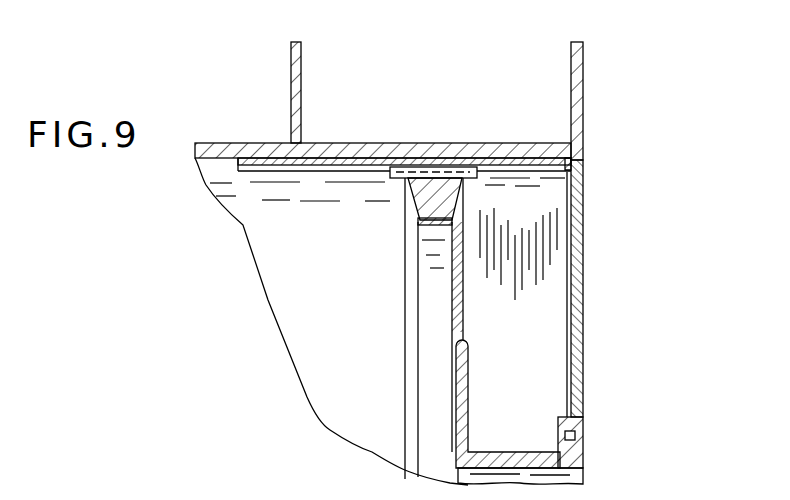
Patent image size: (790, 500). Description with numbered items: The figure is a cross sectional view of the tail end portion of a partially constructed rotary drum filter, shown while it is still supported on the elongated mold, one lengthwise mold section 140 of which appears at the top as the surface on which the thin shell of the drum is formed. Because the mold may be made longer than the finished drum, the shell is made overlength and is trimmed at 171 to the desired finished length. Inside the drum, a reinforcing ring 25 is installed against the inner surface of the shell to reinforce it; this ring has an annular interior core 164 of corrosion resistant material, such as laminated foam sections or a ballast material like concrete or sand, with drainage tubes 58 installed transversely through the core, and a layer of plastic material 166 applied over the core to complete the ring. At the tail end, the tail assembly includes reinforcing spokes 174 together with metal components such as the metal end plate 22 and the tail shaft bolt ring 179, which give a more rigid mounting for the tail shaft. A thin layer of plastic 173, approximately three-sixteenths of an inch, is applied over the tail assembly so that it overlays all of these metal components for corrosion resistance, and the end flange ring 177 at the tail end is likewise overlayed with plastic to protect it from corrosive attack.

The lengthwise mold section 140 is at (338, 143).
The trim location 171 is at (447, 166).
The annular interior core 164 is at (412, 200).
The reinforcing ring 25 is at (410, 231).
The drainage tube 58 is at (478, 173).
The layer of plastic material 166 is at (405, 318).
The layer of plastic 173 is at (571, 312).
The reinforcing spoke 174 is at (534, 403).
The metal end plate 22 is at (583, 297).
The end flange ring 177 is at (578, 160).
The tail shaft bolt ring 179 is at (583, 452).